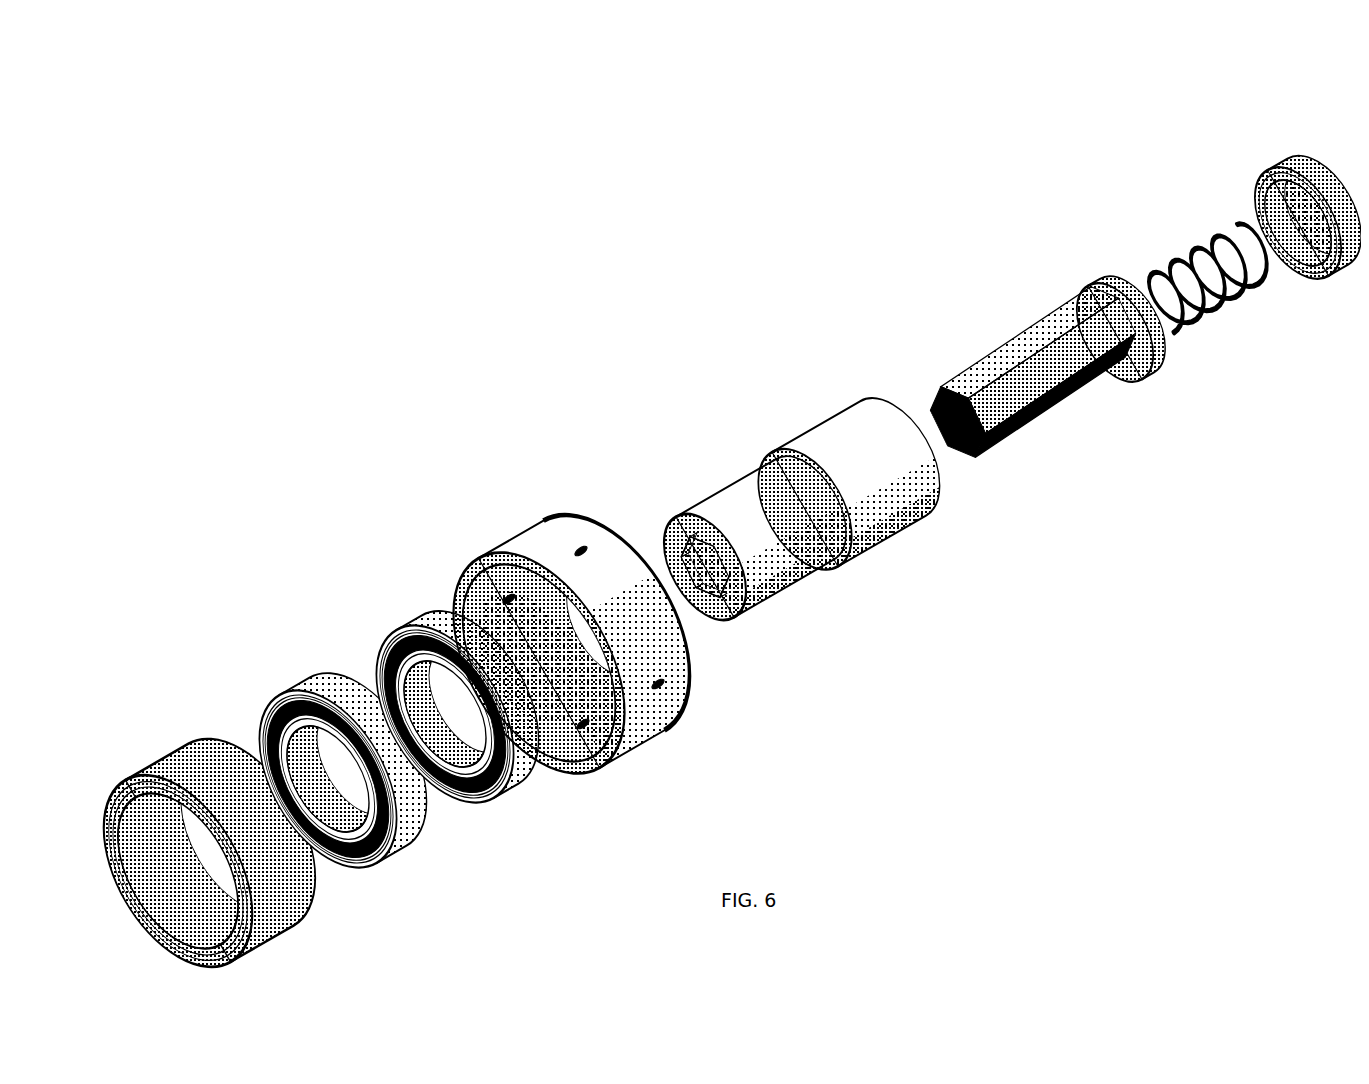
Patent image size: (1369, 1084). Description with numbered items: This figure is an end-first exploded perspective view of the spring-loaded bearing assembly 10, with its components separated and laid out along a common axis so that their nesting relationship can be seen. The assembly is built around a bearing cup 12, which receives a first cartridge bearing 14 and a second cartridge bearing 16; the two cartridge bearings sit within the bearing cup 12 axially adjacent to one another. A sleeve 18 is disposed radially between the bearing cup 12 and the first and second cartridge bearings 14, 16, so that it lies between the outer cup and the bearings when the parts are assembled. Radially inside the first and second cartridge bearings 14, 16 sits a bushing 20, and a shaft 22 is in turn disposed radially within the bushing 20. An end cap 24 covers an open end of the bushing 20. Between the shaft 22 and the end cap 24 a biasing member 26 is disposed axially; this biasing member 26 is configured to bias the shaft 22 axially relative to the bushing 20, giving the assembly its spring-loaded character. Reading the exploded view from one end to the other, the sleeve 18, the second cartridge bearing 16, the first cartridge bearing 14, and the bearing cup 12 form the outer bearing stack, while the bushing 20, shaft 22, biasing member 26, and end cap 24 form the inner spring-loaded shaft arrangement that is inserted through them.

The spring-loaded bearing assembly 10 is at (470, 203).
The bearing cup 12 is at (535, 547).
The first cartridge bearing 14 is at (437, 630).
The second cartridge bearing 16 is at (318, 698).
The sleeve 18 is at (203, 762).
The bushing 20 is at (825, 462).
The shaft 22 is at (1023, 345).
The end cap 24 is at (1300, 185).
The biasing member 26 is at (1203, 233).